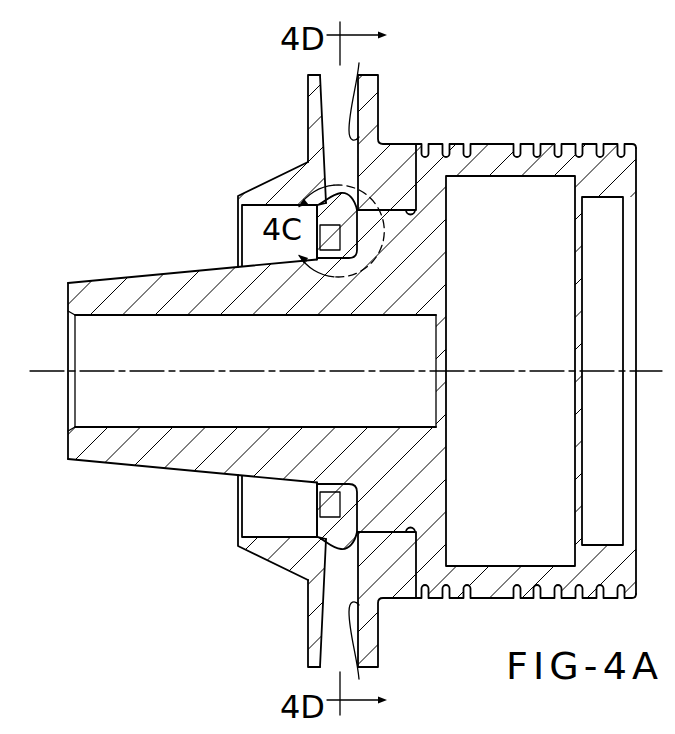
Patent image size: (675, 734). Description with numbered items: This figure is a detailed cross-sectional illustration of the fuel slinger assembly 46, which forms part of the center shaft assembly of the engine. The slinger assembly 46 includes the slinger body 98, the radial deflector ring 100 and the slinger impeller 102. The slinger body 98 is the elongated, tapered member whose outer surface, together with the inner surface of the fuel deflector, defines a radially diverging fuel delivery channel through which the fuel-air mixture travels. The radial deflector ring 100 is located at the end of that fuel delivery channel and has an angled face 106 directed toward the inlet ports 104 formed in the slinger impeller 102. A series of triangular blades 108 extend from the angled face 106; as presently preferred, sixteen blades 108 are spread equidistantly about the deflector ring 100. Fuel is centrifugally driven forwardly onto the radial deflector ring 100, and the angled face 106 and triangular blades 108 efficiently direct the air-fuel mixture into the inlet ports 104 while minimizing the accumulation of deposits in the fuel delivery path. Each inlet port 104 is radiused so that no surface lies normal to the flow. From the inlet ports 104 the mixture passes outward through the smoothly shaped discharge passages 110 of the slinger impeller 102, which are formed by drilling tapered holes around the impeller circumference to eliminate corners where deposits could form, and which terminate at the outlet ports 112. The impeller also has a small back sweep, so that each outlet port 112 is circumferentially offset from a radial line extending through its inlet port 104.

The slinger assembly 46 is at (337, 380).
The slinger body 98 is at (428, 280).
The radial deflector ring 100 is at (330, 262).
The slinger impeller 102 is at (284, 182).
The inlet port 104 is at (352, 556).
The angled face 106 is at (320, 489).
The triangular blades 108 is at (320, 508).
The discharge passages 110 is at (361, 373).
The outlet port 112 is at (325, 75).